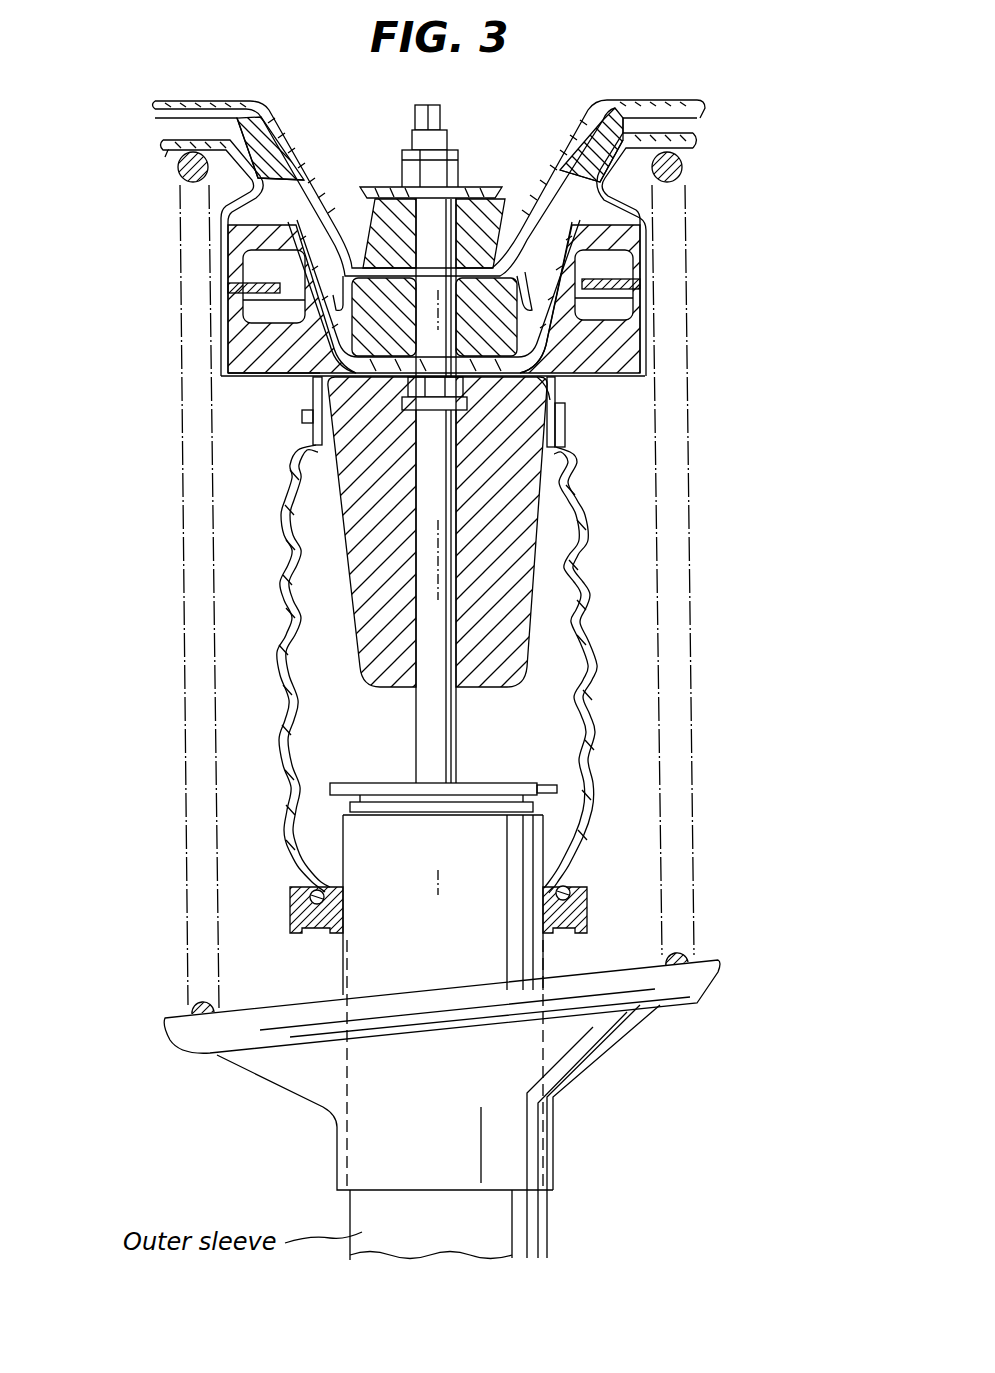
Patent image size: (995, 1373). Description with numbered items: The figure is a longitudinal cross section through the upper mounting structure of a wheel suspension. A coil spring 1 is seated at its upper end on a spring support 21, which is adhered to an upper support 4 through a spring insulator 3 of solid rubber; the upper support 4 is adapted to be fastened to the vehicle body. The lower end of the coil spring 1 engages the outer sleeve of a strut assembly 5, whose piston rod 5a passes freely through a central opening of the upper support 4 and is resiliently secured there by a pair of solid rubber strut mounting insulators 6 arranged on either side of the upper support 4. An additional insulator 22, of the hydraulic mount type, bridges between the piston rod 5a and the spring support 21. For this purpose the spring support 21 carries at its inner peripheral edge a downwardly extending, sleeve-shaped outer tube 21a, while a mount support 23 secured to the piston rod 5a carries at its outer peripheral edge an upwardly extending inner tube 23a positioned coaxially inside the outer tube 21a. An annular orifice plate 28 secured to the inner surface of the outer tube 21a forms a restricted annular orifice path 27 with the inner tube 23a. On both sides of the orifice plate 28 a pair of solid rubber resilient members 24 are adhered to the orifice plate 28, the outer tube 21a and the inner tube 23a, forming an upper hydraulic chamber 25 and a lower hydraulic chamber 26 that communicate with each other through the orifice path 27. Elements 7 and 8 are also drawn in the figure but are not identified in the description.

The coil spring 1 is at (185, 180).
The spring insulator 3 is at (267, 143).
The upper support 4 is at (296, 165).
The strut assembly 5 is at (438, 237).
The piston rod 5a is at (476, 245).
The strut mounting insulators 6 is at (484, 230).
The bump rubber (elastic block) 7 is at (508, 615).
The dust boot bellows 8 is at (585, 562).
The spring support 21 is at (168, 152).
The outer tube 21a is at (221, 303).
The additional insulator 22 is at (254, 388).
The mount support 23 is at (305, 420).
The inner tube 23a is at (312, 248).
The resilient members 24 is at (613, 343).
The upper hydraulic chamber 25 is at (603, 263).
The lower hydraulic chamber 26 is at (607, 307).
The orifice path 27 is at (578, 378).
The orifice plate 28 is at (617, 293).